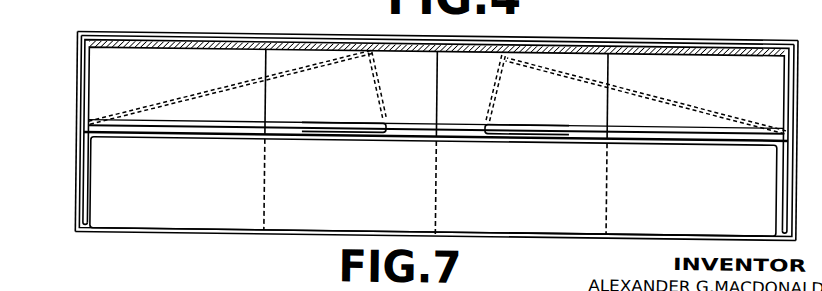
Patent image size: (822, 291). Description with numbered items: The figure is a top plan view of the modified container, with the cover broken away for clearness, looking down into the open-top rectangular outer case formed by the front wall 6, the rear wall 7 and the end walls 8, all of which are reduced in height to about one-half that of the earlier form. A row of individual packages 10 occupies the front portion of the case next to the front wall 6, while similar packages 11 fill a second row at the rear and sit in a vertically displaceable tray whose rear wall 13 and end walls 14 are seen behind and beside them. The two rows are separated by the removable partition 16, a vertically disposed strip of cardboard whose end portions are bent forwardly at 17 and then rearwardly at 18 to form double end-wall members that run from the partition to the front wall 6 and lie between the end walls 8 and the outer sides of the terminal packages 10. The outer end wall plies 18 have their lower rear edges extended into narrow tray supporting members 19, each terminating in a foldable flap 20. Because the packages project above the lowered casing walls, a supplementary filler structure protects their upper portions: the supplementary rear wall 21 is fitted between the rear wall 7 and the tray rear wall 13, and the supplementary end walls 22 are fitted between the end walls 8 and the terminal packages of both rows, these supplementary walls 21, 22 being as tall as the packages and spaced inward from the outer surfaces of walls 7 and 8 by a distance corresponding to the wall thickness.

The front wall 6 is at (509, 228).
The rear wall 7 is at (367, 31).
The end walls 8 is at (79, 178).
The individual packages 10 is at (255, 223).
The packages 11 is at (265, 54).
The rear wall of tray 13 is at (590, 44).
The end walls of tray 14 is at (91, 97).
The removable partition 16 is at (394, 132).
The forwardly bent end portion 17 is at (93, 178).
The outer end wall ply 18 is at (87, 203).
The tray supporting members 19 is at (223, 121).
The foldable flap 20 is at (359, 124).
The supplementary rear wall 21 is at (548, 28).
The supplementary end walls 22 is at (82, 79).